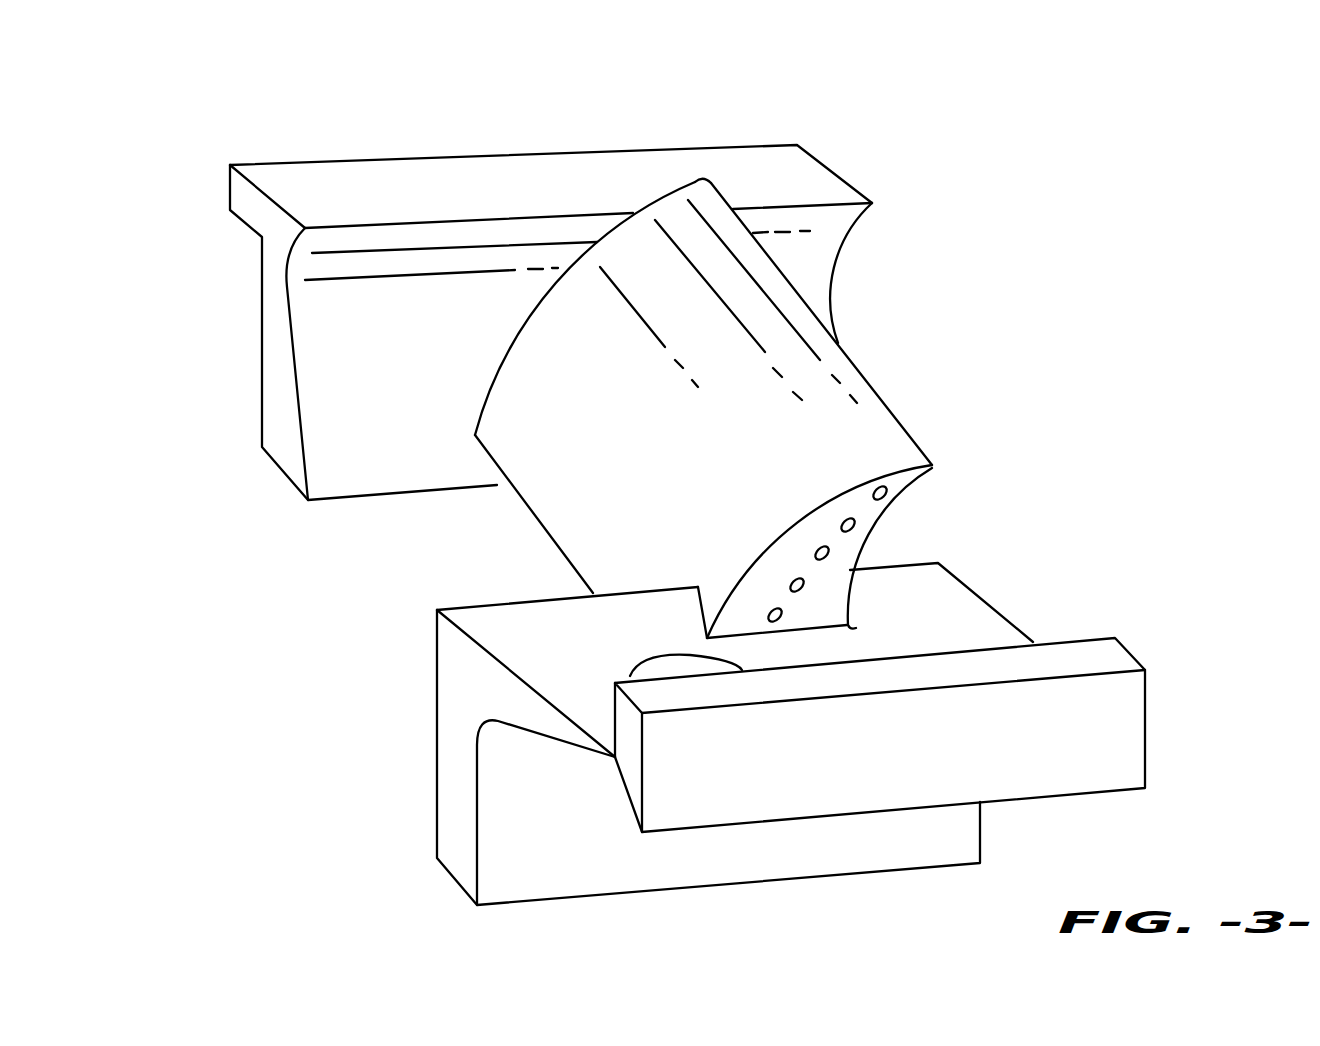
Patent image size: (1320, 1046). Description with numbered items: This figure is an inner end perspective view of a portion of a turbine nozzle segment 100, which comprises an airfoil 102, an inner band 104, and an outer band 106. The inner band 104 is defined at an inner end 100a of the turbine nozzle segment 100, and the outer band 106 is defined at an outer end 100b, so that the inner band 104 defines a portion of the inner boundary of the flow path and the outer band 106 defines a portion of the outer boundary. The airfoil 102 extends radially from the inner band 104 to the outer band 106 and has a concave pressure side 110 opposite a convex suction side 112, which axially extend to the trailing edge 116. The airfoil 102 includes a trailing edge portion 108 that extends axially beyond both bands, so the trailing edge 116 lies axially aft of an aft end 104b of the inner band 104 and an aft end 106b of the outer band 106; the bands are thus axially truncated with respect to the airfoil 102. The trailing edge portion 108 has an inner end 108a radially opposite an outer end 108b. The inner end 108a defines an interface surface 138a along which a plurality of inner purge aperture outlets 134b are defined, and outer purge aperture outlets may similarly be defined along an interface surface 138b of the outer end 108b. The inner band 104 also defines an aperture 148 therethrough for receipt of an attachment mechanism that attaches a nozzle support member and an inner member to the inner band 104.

The turbine nozzle segment 100 is at (253, 128).
The inner end 100a is at (1053, 600).
The outer end 100b is at (862, 160).
The airfoil 102 is at (510, 442).
The inner band 104 is at (577, 868).
The aft end 104b is at (488, 635).
The outer band 106 is at (415, 183).
The aft end 106b is at (547, 182).
The trailing edge portion 108 is at (642, 197).
The inner end 108a is at (948, 458).
The outer end 108b is at (723, 182).
The pressure side 110 is at (913, 515).
The suction side 112 is at (560, 493).
The trailing edge 116 is at (860, 368).
The inner purge aperture outlets 134b is at (778, 615).
The interface surface 138a is at (773, 558).
The interface surface 138b is at (678, 183).
The aperture 148 is at (677, 668).